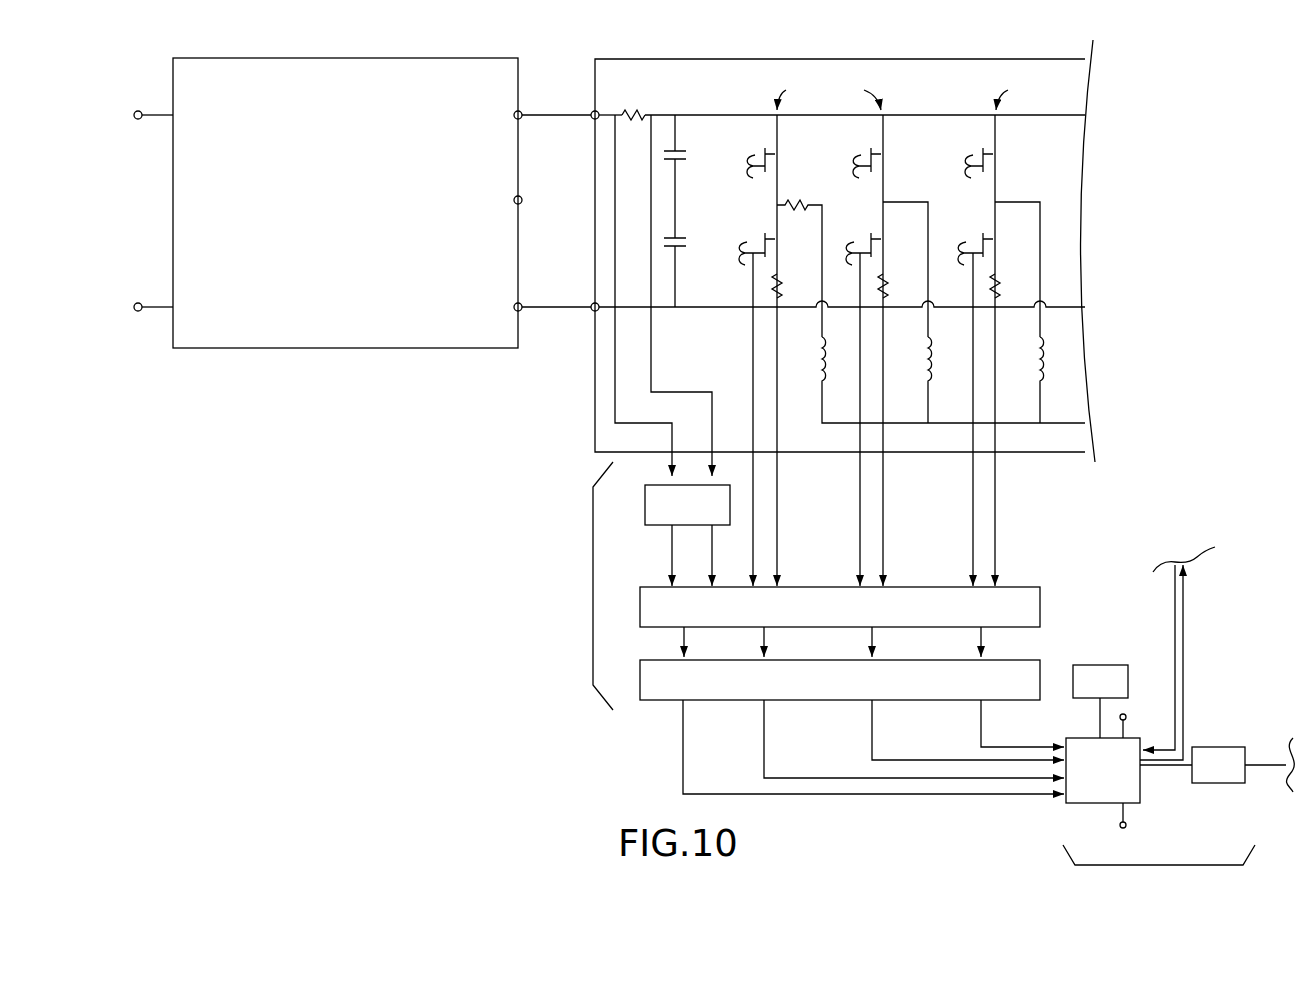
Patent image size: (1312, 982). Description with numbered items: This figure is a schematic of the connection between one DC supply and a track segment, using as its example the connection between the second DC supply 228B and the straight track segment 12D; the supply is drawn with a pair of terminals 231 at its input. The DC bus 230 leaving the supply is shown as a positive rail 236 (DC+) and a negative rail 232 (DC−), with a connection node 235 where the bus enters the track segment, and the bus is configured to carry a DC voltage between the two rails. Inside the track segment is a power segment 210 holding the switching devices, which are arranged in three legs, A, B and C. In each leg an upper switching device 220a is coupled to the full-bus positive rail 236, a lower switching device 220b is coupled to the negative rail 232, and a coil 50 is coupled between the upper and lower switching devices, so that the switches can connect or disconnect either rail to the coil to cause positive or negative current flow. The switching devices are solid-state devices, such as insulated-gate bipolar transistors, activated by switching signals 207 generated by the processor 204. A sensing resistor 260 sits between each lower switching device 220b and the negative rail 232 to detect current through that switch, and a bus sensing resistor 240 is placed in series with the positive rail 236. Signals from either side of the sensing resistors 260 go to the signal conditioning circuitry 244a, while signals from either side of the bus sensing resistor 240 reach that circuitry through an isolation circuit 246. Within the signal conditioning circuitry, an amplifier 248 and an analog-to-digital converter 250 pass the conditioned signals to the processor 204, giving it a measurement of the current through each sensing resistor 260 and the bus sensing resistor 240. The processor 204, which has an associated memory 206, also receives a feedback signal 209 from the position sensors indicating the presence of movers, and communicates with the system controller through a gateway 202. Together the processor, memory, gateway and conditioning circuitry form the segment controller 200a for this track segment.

The second DC supply 228B is at (349, 58).
The terminals 231 is at (131, 101).
The DC bus 230 is at (565, 56).
The connection node 235 is at (604, 108).
The positive rail 236 is at (560, 121).
The negative rail 232 is at (552, 312).
The bus sensing resistor 240 is at (641, 102).
The straight track segment 12D is at (859, 59).
The power segment 210 is at (951, 90).
The switching signals 207 is at (752, 149).
The upper switching device 220a is at (817, 149).
The lower switching device 220b is at (753, 235).
The sensing resistor 260 is at (803, 277).
The coil 50 is at (818, 350).
The isolation circuit 246 is at (672, 350).
The signal conditioning circuitry 244a is at (593, 588).
The amplifier 248 is at (1022, 585).
The Analog-to-Digital Converter 250 is at (1022, 659).
The processor 204 is at (1087, 804).
The memory 206 is at (1100, 701).
The gateway 202 is at (1208, 746).
The feedback signal 209 is at (1187, 610).
The control system 200a is at (1170, 866).